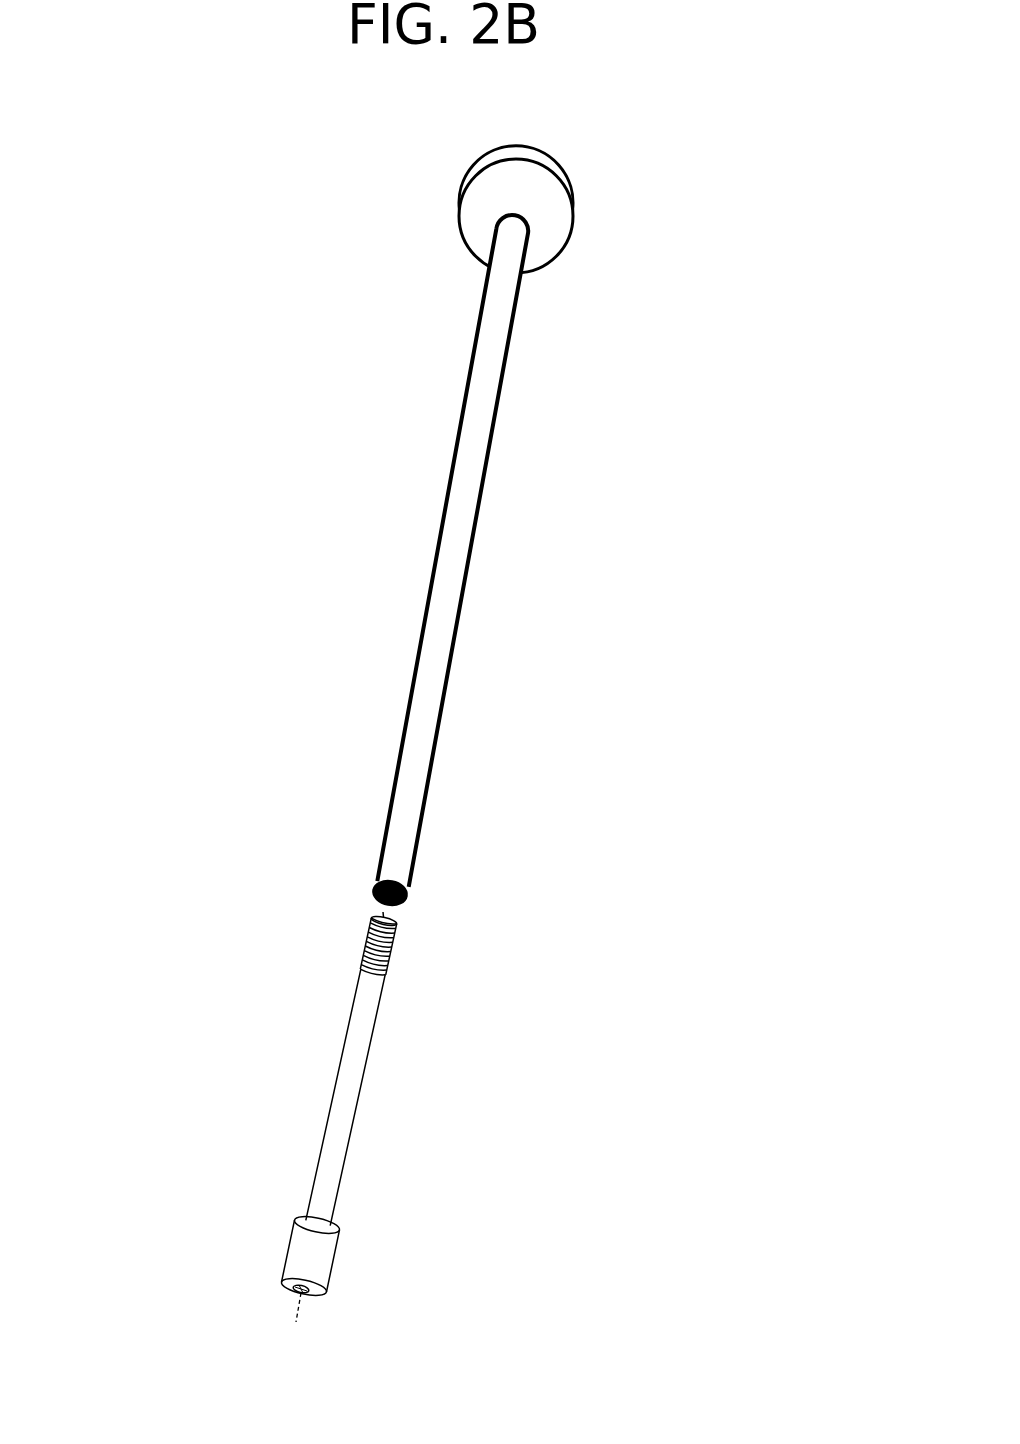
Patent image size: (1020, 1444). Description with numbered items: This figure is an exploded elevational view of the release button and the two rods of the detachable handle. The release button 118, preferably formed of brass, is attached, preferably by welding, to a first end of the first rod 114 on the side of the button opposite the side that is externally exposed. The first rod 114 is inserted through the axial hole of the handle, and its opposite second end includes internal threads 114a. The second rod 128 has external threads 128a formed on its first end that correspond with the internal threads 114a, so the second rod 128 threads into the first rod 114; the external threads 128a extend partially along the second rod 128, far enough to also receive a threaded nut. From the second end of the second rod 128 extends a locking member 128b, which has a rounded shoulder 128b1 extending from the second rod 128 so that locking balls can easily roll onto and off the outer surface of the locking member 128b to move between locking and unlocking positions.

The release button 118 is at (587, 228).
The first rod 114 is at (425, 553).
The internal threads 114a is at (403, 905).
The external threads 128a is at (350, 942).
The second rod 128 is at (320, 1028).
The locking member 128b is at (288, 1242).
The rounded shoulder 128b1 is at (337, 1223).